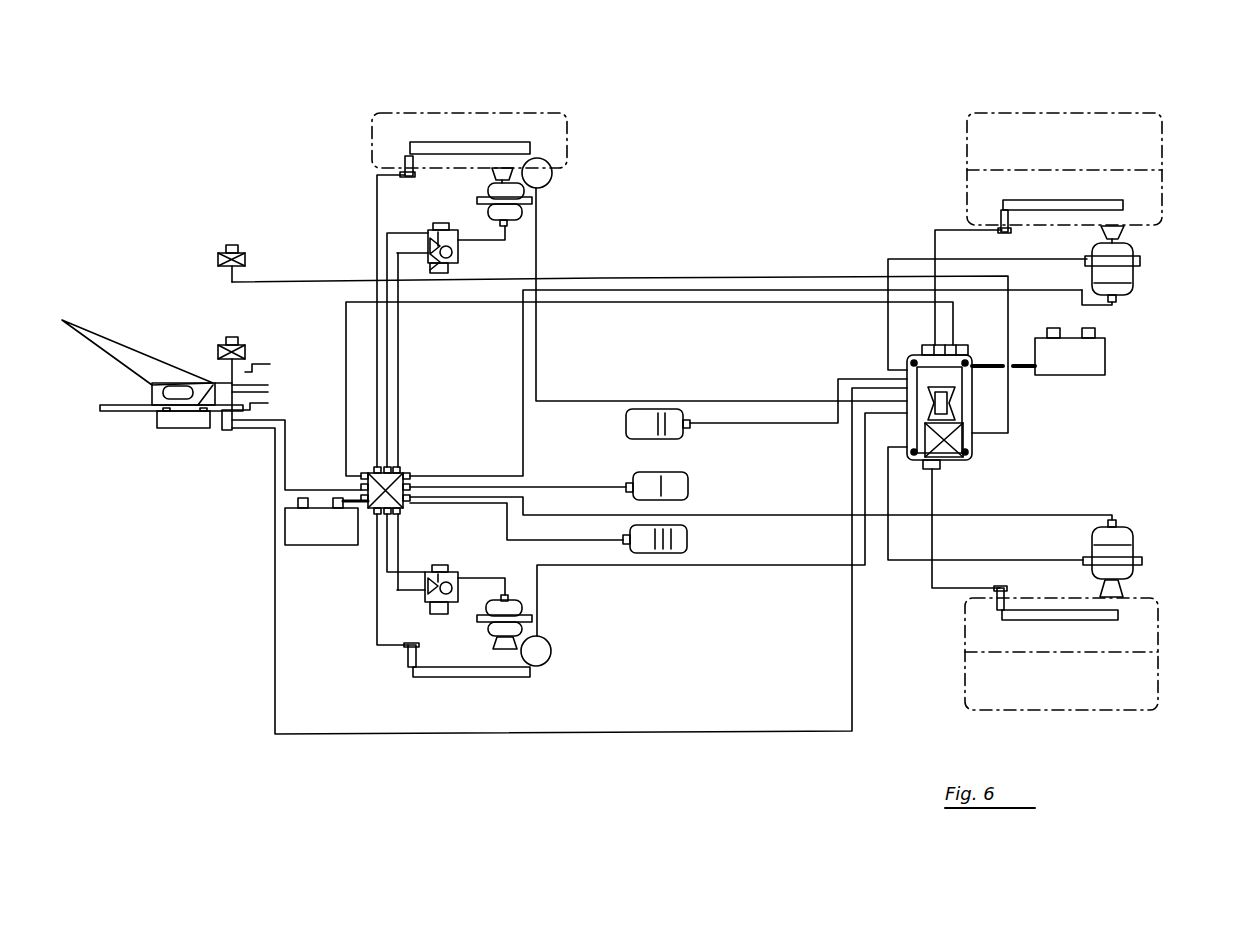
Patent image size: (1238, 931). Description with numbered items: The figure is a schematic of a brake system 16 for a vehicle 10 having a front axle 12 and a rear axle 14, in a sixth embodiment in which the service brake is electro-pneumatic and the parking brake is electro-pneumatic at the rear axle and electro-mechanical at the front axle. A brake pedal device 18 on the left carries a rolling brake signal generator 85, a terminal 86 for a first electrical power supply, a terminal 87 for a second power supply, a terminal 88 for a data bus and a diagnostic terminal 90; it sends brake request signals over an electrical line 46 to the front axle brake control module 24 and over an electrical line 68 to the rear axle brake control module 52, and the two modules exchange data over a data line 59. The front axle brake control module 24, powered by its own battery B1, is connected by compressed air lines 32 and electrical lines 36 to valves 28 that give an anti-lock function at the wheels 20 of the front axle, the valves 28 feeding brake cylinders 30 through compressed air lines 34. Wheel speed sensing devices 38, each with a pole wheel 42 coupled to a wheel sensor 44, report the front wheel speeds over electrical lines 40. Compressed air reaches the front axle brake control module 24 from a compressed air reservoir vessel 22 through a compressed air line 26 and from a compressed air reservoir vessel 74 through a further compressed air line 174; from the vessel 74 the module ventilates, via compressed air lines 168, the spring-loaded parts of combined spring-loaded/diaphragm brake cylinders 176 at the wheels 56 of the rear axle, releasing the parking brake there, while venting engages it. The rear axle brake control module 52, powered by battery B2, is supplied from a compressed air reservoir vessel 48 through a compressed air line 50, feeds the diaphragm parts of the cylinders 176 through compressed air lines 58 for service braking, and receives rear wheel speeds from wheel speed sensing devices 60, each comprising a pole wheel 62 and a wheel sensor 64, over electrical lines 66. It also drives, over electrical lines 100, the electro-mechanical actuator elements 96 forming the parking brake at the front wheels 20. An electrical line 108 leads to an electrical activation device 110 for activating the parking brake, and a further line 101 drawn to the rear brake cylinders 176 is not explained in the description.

The vehicle 10 is at (1198, 140).
The front axle 12 is at (465, 108).
The rear axle 14 is at (1084, 107).
The brake system 16 is at (728, 270).
The brake pedal device 18 is at (142, 430).
The wheels 20 is at (567, 127).
The compressed air reservoir vessel 22 is at (690, 487).
The front axle brake control module 24 is at (406, 507).
The compressed air line 26 is at (560, 487).
The valve unit 28 is at (458, 257).
The brake cylinder 30 is at (485, 205).
The compressed air lines 32 is at (398, 233).
The compressed air lines 34 is at (505, 240).
The electrical lines 36 is at (400, 360).
The wheel speed sensing device 38 is at (414, 168).
The electrical lines 40 is at (377, 205).
The pole wheel 42 is at (458, 142).
The wheel sensor 44 is at (404, 159).
The electrical line 46 is at (310, 490).
The compressed air reservoir vessel 48 is at (675, 408).
The compressed air line 50 is at (768, 425).
The rear axle brake control module 52 is at (975, 405).
The wheels 56 is at (1162, 217).
The compressed air lines 58 is at (960, 259).
The data line 59 is at (730, 292).
The wheel speed sensing device 60 is at (1012, 224).
The pole wheel 62 is at (1080, 200).
The wheel sensor 64 is at (1001, 212).
The electrical lines 66 is at (937, 244).
The electrical line 68 is at (852, 622).
The compressed air reservoir vessel 74 is at (690, 540).
The rolling brake signal generator 85 is at (220, 345).
The terminal 86 is at (270, 364).
The terminal 87 is at (268, 385).
The data bus terminal 88 is at (268, 392).
The diagnostic terminal 90 is at (268, 403).
The actuator element 96 is at (551, 178).
The electrical lines 100 is at (537, 230).
The hydraulic line 101 is at (1040, 515).
The electrical line 108 is at (288, 282).
The electrical activation device 110 is at (245, 262).
The compressed air lines 168 is at (1060, 292).
The compressed air line 174 is at (576, 540).
The combined spring-loaded/diaphragm brake cylinder 176 is at (1135, 278).
The battery B1 is at (318, 545).
The battery B2 is at (1105, 365).